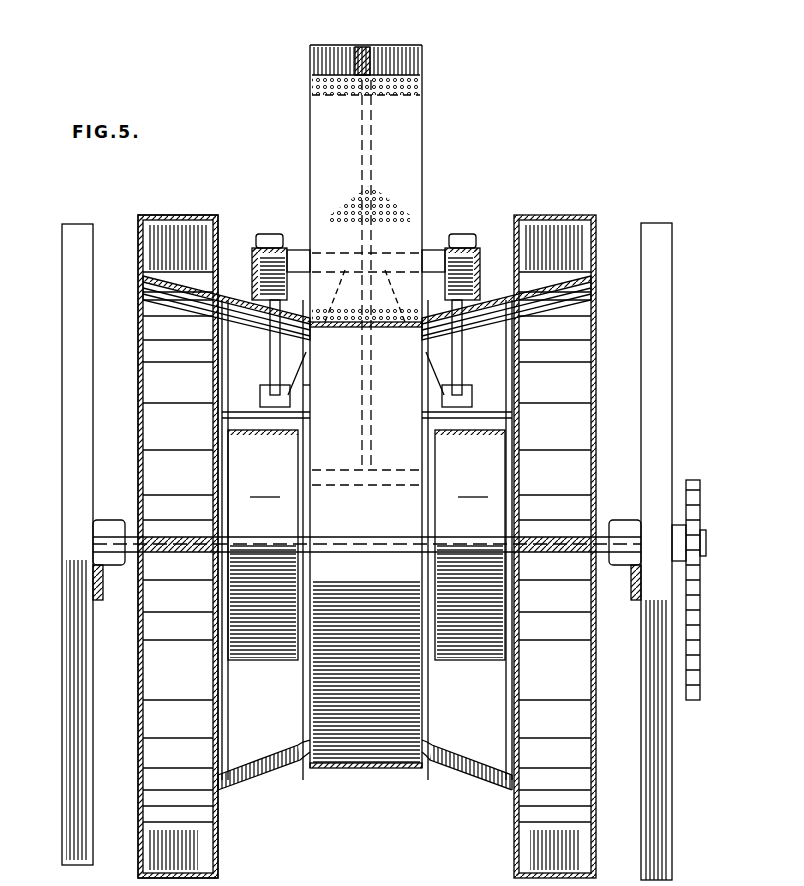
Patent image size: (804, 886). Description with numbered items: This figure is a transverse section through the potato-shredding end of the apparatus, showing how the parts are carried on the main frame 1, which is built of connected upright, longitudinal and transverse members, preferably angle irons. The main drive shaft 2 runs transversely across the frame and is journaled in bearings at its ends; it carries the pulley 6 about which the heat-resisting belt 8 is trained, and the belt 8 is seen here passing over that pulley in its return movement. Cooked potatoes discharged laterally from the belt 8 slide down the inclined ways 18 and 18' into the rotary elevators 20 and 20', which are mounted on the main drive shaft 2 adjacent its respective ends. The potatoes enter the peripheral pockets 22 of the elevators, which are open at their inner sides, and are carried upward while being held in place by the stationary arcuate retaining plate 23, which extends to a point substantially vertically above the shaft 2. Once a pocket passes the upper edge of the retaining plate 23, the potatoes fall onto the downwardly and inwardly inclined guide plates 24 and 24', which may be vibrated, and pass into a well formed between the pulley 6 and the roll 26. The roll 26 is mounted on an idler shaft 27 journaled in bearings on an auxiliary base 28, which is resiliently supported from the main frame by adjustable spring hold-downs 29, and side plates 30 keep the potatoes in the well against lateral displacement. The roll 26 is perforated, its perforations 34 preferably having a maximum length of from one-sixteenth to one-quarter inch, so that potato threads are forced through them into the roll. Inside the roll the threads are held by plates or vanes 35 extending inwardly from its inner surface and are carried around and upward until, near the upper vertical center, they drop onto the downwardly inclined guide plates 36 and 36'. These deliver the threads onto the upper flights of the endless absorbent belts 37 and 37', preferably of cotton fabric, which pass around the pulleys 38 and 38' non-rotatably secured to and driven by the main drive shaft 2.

The main frame 1 is at (62, 497).
The main drive shaft 2 is at (224, 547).
The pulley 6 is at (382, 500).
The belt or band 8 is at (345, 327).
The inclined way 18 is at (264, 778).
The inclined way 18' is at (467, 776).
The rotary elevator 20 is at (159, 546).
The rotary elevator 20' is at (570, 546).
The peripheral pockets 22 is at (150, 231).
The stationary arcuate retaining plate 23 is at (180, 287).
The guide plate 24 is at (226, 278).
The guide plate 24' is at (506, 272).
The roll 26 is at (425, 62).
The idler shaft 27 is at (434, 250).
The auxiliary base 28 is at (282, 246).
The adjustable spring hold-downs 29 is at (270, 378).
The side plates 30 is at (312, 382).
The perforations 34 is at (397, 48).
The plates or vanes 35 is at (362, 47).
The guide plate 36 is at (314, 371).
The guide plate 36' is at (413, 368).
The endless absorbent belt 37 is at (263, 563).
The endless absorbent belt 37' is at (470, 562).
The pulley 38 is at (265, 488).
The pulley 38' is at (473, 488).